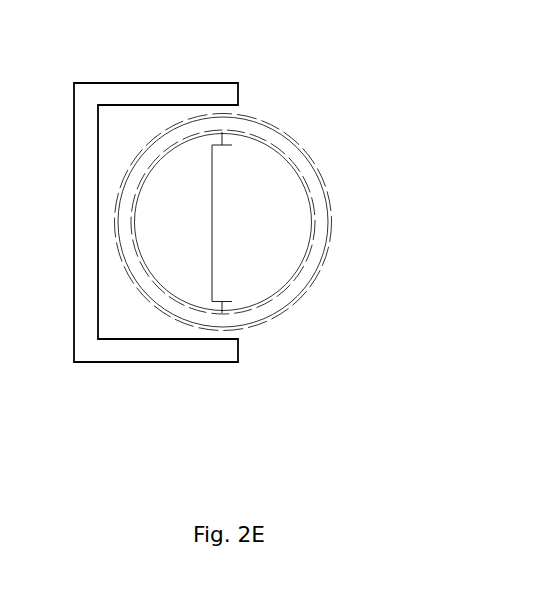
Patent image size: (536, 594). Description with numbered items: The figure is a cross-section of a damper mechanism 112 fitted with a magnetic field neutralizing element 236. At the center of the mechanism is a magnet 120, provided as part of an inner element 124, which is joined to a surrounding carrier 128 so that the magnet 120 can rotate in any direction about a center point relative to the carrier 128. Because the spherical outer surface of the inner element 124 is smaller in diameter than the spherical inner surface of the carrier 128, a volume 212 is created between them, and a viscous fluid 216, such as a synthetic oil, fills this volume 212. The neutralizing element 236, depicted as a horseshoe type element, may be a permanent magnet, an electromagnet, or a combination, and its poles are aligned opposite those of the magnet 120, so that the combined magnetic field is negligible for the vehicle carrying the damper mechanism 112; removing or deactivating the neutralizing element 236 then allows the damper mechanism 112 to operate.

The damper mechanism 112 is at (324, 125).
The magnet 120 is at (222, 195).
The inner element 124 is at (292, 283).
The carrier 128 is at (316, 167).
The volume 212 is at (317, 251).
The viscous fluid 216 is at (268, 310).
The magnetic field neutralizing element 236 is at (152, 83).